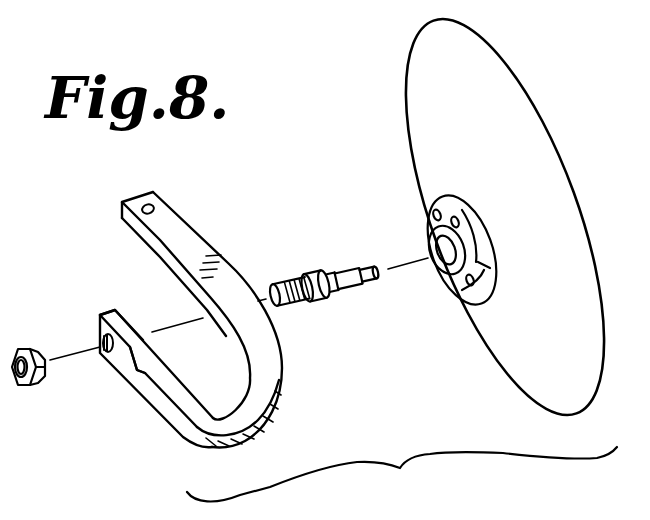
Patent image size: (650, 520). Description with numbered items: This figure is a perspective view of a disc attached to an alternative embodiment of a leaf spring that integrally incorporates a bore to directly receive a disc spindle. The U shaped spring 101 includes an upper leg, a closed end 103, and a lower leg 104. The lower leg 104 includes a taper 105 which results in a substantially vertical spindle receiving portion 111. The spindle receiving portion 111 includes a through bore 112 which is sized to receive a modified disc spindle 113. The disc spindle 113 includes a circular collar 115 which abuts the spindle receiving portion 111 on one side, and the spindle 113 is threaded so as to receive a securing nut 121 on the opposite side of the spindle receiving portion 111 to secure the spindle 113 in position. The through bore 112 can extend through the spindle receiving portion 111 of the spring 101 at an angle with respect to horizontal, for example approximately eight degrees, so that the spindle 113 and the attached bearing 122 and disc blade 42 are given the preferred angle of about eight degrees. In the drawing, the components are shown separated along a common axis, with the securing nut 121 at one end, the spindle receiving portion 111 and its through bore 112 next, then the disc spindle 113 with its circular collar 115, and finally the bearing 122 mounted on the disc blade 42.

The disc blade 42 is at (412, 131).
The U shaped spring 101 is at (191, 334).
The closed end 103 is at (270, 394).
The lower leg 104 is at (163, 407).
The taper 105 is at (133, 370).
The spindle receiving portion 111 is at (113, 311).
The through bore 112 is at (100, 338).
The disc spindle 113 is at (324, 275).
The circular collar 115 is at (288, 292).
The securing nut 121 is at (14, 388).
The bearing 122 is at (448, 284).